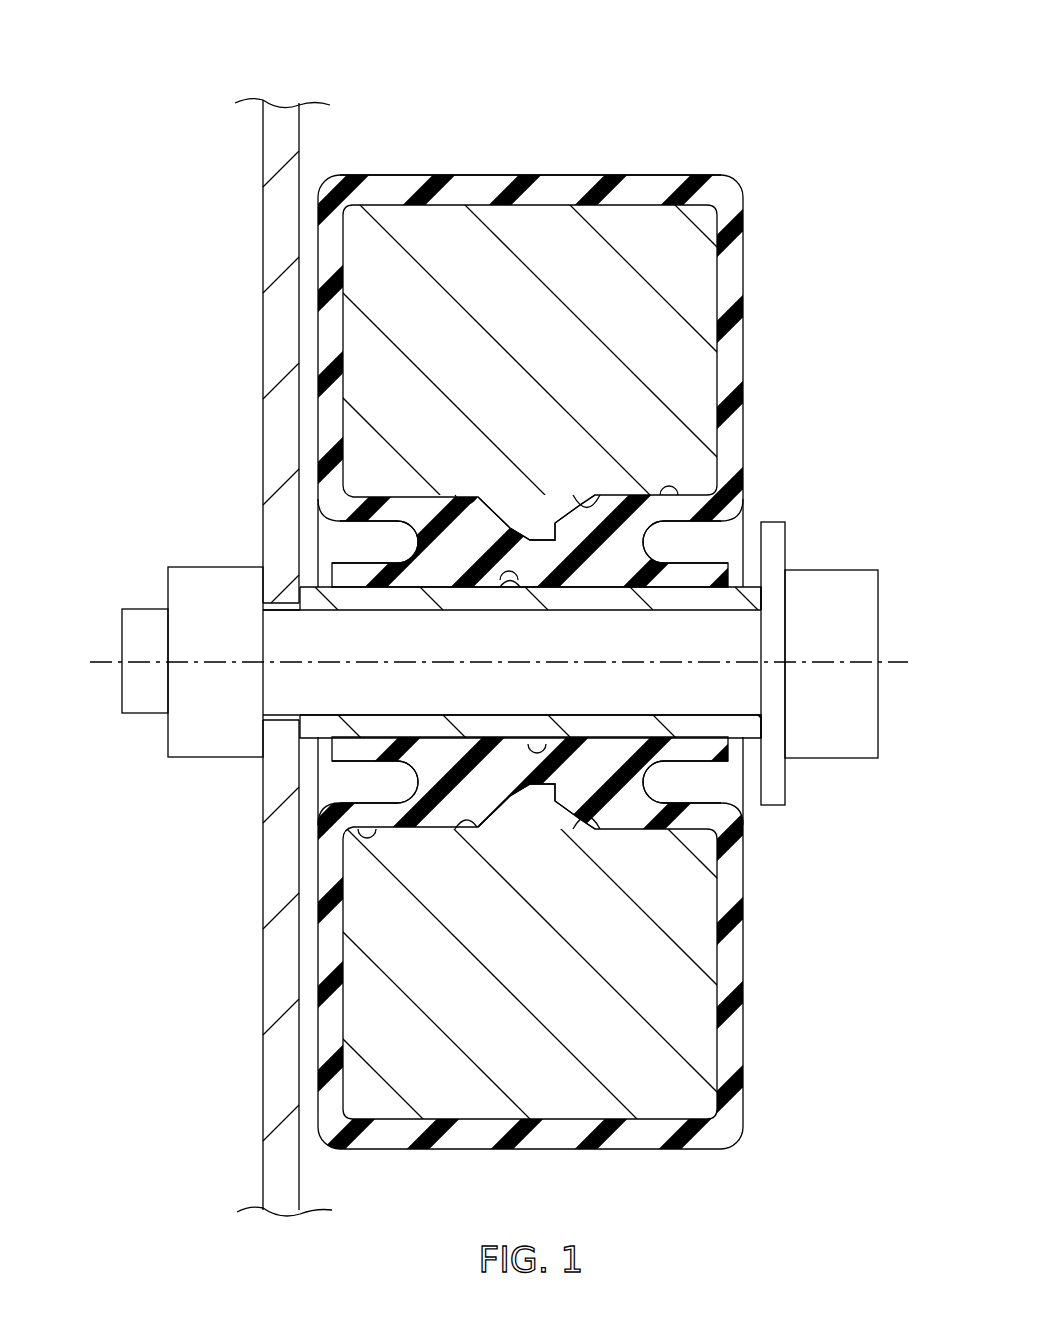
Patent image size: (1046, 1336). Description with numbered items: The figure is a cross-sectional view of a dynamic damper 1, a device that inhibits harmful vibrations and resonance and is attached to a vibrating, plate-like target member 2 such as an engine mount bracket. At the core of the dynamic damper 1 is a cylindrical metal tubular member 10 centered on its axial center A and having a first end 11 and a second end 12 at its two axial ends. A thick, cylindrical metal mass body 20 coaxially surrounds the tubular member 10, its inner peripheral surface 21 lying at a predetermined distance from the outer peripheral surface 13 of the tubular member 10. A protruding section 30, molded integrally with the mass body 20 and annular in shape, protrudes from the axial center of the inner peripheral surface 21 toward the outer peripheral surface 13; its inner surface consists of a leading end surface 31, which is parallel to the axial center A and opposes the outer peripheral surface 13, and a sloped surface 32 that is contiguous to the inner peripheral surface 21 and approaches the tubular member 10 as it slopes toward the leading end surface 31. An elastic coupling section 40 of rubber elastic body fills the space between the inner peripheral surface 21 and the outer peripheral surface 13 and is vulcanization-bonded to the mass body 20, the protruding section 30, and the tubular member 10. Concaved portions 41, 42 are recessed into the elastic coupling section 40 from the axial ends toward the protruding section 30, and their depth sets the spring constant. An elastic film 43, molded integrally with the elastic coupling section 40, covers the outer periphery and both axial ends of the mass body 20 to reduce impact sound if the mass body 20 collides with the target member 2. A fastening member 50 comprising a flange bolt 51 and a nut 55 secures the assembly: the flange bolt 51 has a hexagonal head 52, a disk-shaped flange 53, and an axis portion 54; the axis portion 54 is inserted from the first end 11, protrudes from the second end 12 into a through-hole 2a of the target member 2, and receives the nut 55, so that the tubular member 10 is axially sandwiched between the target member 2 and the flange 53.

The dynamic damper 1 is at (838, 72).
The target member 2 is at (262, 228).
The through-hole 2a is at (280, 714).
The tubular member 10 is at (458, 602).
The first end 11 is at (761, 600).
The second end 12 is at (300, 598).
The outer peripheral surface 13 is at (511, 588).
The mass body 20 is at (703, 287).
The inner peripheral surface 21 is at (680, 495).
The protruding section 30 is at (567, 537).
The leading end surface 31 is at (518, 550).
The sloped surface 32 is at (472, 497).
The elastic coupling section 40 is at (430, 750).
The concaved portion 41 is at (660, 545).
The concaved portion 42 is at (408, 543).
The elastic film 43 is at (487, 190).
The fastening member 50 is at (160, 521).
The flange bolt 51 is at (866, 537).
The head 52 is at (865, 633).
The flange 53 is at (775, 790).
The axis portion 54 is at (143, 638).
The nut 55 is at (215, 740).
The axial center A is at (320, 661).